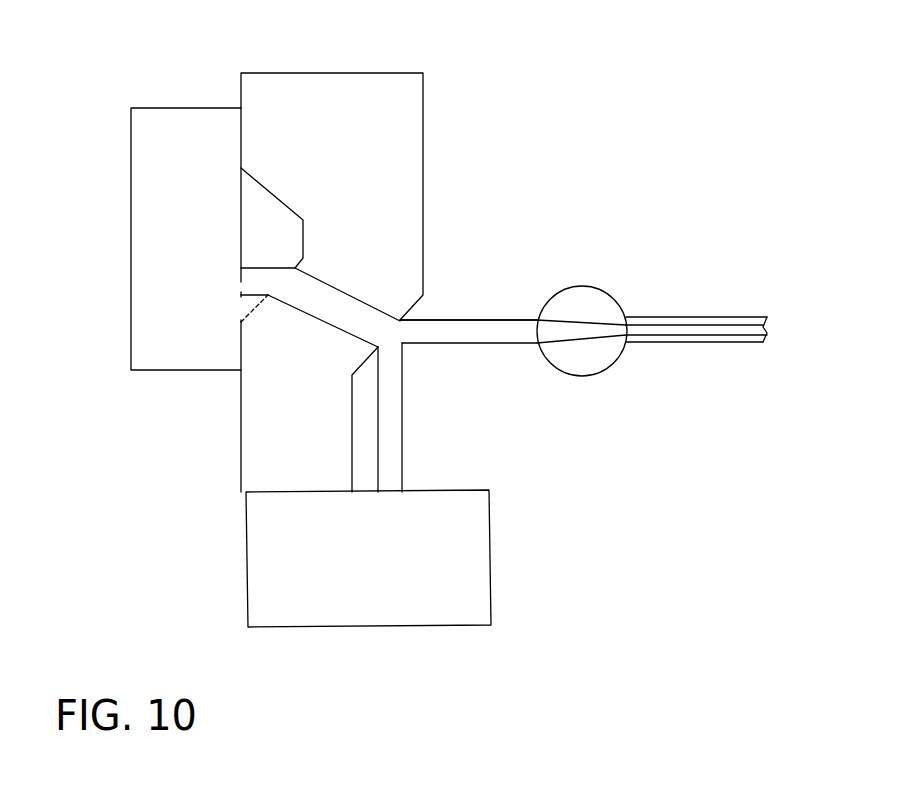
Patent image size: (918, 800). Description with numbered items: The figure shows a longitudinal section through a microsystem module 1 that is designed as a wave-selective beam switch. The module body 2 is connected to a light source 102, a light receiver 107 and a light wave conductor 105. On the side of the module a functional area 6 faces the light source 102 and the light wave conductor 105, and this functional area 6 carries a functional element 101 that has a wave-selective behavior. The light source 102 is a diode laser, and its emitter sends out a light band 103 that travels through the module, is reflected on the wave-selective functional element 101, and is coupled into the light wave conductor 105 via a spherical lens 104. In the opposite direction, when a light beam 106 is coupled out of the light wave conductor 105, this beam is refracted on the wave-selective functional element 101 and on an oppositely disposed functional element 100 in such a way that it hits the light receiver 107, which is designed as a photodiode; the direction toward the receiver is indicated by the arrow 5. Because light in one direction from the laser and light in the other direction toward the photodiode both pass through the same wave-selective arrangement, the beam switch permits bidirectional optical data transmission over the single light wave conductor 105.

The microsystem module 1 is at (560, 74).
The body 2 is at (366, 226).
The flow direction 5 is at (250, 245).
The functional area 6 is at (468, 376).
The functional element 100 is at (254, 307).
The wave-selective functional element 101 is at (415, 307).
The light source 102 is at (469, 557).
The light band 103 is at (390, 433).
The spherical lens 104 is at (600, 353).
The light wave conductor 105 is at (745, 338).
The light beam 106 is at (338, 308).
The light receiver 107 is at (193, 142).